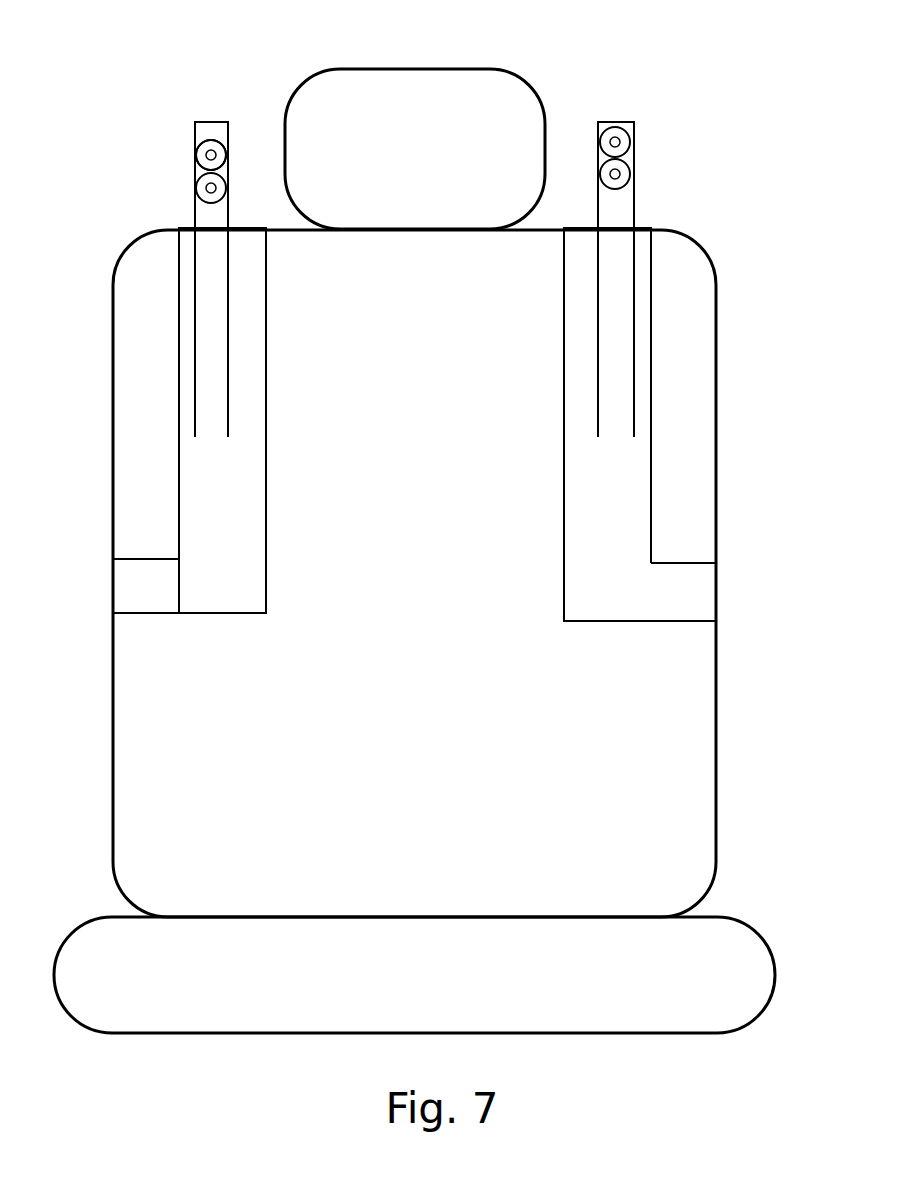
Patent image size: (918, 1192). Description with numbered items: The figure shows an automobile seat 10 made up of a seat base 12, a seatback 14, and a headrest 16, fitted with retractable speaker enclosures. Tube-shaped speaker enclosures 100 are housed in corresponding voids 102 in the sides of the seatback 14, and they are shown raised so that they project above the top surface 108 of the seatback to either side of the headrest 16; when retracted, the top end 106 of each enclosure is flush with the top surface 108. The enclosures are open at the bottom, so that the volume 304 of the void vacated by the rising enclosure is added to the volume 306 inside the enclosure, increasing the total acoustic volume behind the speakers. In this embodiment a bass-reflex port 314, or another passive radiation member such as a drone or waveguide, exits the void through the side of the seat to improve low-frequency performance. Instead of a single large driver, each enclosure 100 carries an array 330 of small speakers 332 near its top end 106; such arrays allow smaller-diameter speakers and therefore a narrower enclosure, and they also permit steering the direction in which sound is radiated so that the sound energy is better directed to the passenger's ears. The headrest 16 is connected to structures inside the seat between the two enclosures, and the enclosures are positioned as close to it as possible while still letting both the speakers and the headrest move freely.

The automobile seat 10 is at (440, 520).
The seat base 12 is at (761, 929).
The seatback 14 is at (718, 661).
The headrest 16 is at (527, 72).
The speaker enclosure 100 is at (195, 375).
The void 102 is at (179, 408).
The top end 106 is at (207, 122).
The top surface 108 is at (167, 228).
The volume of the void 304 is at (242, 517).
The volume of the enclosure 306 is at (210, 335).
The bass-reflex port 314 is at (112, 590).
The array 330 is at (188, 203).
The small speaker 332 is at (230, 183).